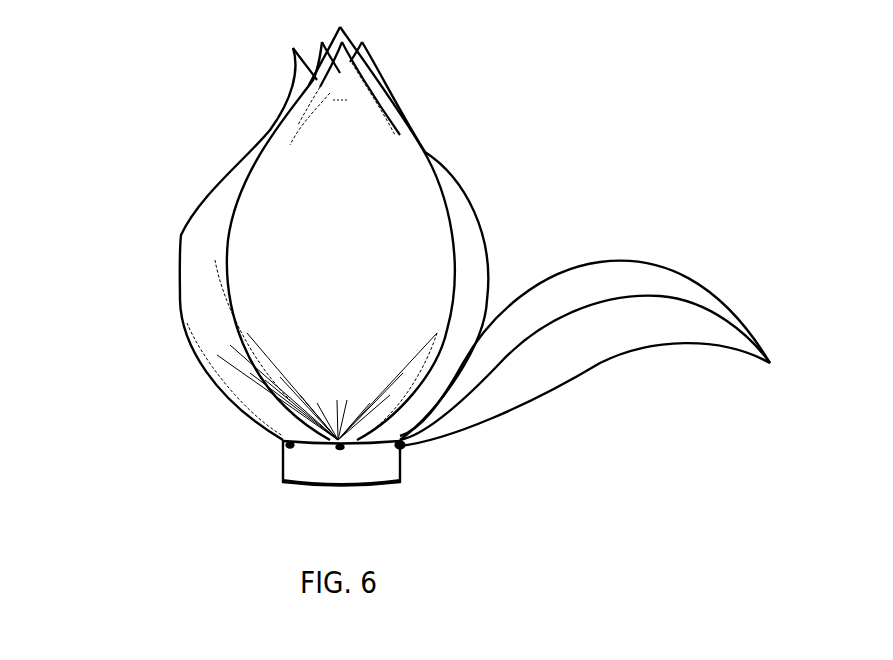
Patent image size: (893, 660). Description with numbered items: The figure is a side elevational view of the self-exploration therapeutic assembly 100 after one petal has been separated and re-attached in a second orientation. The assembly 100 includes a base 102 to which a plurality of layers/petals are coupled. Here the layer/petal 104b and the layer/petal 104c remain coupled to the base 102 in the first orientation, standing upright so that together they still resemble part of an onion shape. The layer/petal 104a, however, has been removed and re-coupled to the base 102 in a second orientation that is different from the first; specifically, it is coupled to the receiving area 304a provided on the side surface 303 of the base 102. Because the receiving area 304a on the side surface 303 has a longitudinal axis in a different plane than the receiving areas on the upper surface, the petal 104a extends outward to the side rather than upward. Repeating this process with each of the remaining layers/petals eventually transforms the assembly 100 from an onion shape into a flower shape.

The self-exploration therapeutic assembly 100 is at (357, 538).
The base 102 is at (282, 463).
The layer/petal 104a is at (607, 292).
The layer/petal 104b is at (397, 203).
The layer/petal 104c is at (193, 280).
The side surface 303 is at (294, 479).
The receiving area 304a is at (403, 446).